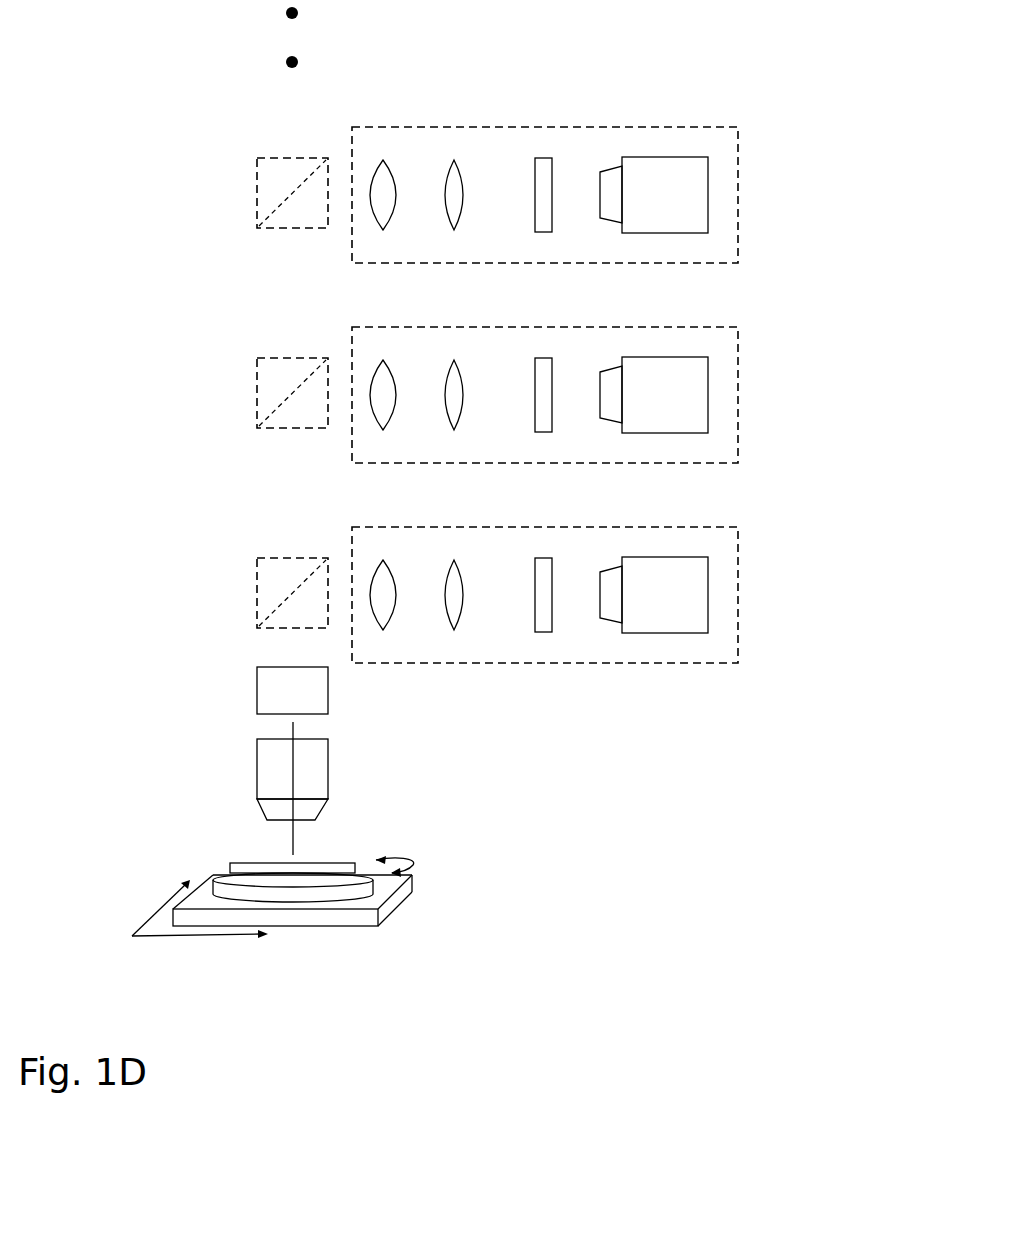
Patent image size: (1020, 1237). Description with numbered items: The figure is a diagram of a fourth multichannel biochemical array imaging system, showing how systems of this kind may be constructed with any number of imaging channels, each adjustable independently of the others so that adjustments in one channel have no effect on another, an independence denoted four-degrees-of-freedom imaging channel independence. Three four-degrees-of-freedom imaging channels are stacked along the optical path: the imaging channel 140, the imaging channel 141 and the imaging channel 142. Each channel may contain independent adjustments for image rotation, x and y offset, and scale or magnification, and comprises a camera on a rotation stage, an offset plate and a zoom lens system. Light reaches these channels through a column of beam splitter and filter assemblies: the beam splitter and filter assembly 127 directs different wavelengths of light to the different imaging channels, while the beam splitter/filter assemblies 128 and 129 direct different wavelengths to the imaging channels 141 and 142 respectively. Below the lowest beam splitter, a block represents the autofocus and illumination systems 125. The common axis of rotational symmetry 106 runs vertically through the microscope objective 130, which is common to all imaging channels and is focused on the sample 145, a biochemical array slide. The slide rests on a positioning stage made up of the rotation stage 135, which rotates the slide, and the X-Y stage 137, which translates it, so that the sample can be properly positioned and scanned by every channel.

The beam splitter/filter assembly 129 is at (253, 162).
The beam splitter/filter assembly 128 is at (253, 362).
The beam splitter and filter assembly 127 is at (253, 562).
The imaging channel 142 is at (743, 195).
The imaging channel 141 is at (743, 395).
The imaging channel 140 is at (743, 595).
The autofocus and illumination systems 125 is at (332, 707).
The common axis of rotational symmetry 106 is at (297, 730).
The microscope objective 130 is at (332, 777).
The sample 145 is at (337, 862).
The rotation stage 135 is at (353, 890).
The X-Y stage 137 is at (343, 922).